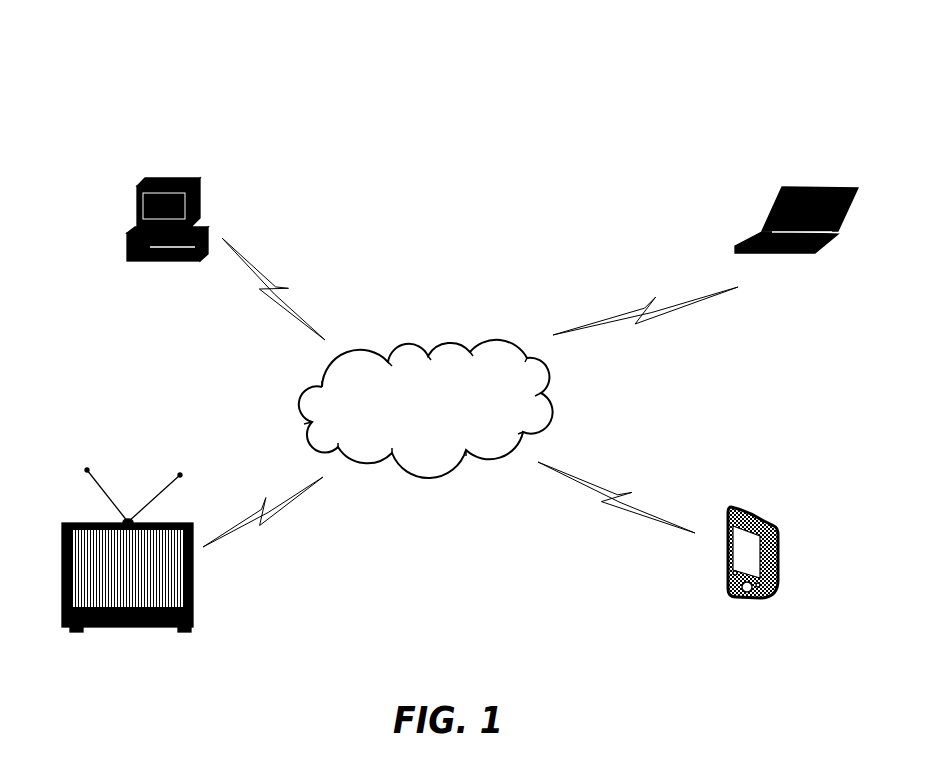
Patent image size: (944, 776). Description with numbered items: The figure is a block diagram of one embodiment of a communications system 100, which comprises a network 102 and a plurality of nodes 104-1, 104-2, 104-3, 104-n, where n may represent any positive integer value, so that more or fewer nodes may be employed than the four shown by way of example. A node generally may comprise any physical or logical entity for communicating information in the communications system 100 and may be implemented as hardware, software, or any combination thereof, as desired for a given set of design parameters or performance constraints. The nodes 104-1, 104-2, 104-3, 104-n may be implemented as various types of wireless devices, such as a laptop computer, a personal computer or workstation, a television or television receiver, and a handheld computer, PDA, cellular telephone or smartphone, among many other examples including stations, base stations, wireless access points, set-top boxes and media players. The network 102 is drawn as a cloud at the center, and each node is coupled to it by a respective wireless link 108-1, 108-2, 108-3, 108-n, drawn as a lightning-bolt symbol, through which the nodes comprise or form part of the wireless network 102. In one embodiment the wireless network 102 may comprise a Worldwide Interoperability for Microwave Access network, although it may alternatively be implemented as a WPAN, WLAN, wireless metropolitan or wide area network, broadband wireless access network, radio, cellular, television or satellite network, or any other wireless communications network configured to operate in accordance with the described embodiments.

The communications system 100 is at (408, 97).
The network 102 is at (426, 409).
The node 104-1 is at (796, 235).
The node 104-2 is at (164, 233).
The node 104-3 is at (127, 564).
The node 104-n is at (751, 569).
The communication link 108-1 is at (647, 297).
The communication link 108-2 is at (272, 312).
The communication link 108-3 is at (222, 501).
The communication link 108-n is at (614, 470).